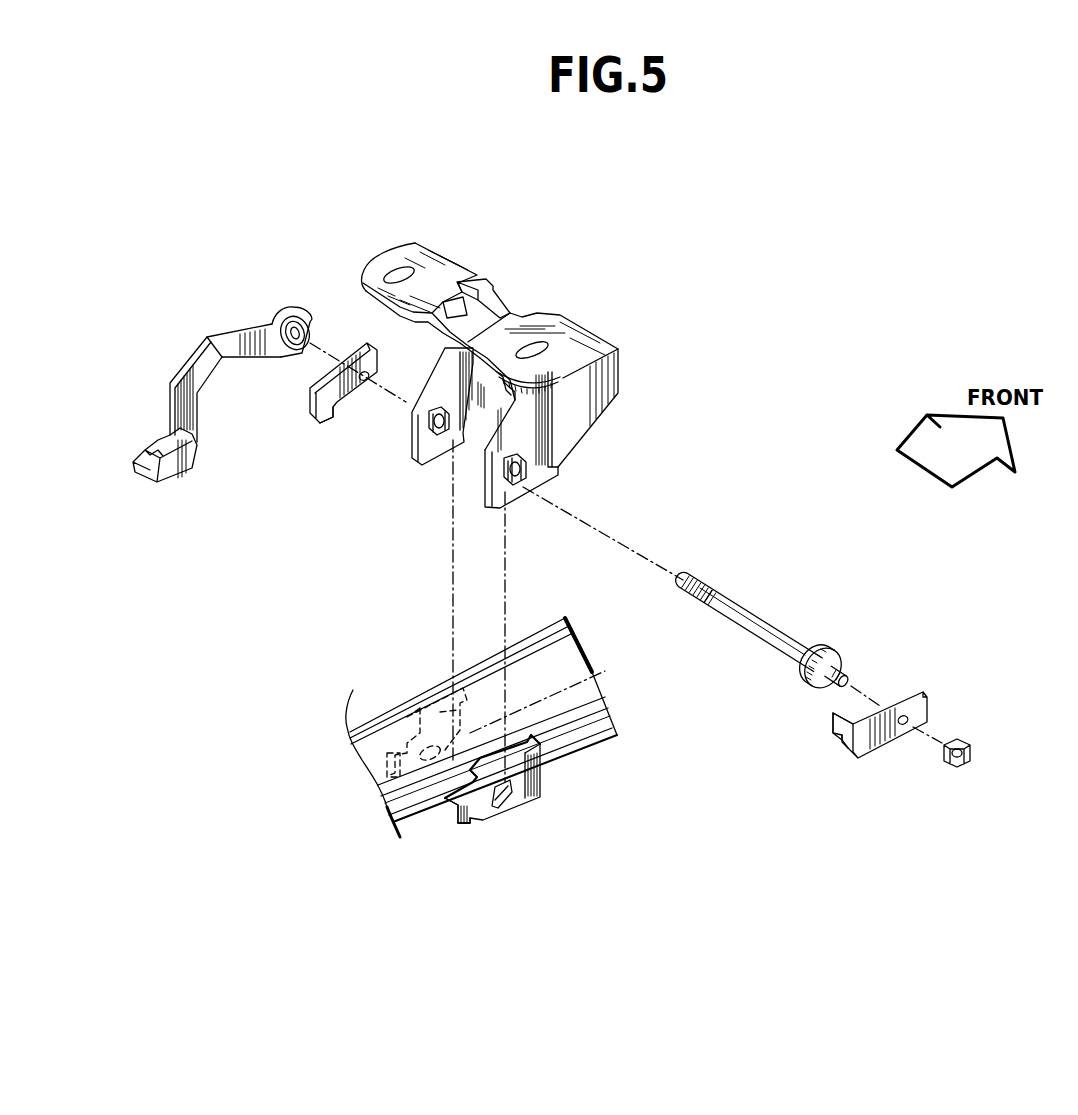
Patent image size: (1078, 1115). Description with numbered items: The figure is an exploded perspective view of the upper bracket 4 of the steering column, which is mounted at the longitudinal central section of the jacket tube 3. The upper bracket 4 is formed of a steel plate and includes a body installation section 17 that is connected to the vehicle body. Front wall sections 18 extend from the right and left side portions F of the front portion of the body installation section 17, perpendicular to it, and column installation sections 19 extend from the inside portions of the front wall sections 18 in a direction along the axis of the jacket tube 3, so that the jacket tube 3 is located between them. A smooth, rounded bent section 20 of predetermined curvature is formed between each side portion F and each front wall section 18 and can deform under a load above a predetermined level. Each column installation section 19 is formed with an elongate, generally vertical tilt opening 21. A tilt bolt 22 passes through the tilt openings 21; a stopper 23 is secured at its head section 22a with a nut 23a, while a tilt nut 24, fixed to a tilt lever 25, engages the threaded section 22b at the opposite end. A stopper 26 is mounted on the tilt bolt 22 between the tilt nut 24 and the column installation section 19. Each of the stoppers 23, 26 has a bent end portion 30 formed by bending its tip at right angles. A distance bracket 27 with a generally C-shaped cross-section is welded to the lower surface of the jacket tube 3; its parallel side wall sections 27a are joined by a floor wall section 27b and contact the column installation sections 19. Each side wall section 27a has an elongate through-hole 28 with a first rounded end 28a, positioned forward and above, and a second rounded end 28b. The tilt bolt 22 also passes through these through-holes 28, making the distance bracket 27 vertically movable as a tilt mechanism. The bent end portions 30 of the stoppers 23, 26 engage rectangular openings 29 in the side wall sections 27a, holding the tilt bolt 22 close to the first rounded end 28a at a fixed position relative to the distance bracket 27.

The jacket tube 3 is at (353, 690).
The upper bracket 4 is at (528, 367).
The body installation section 17 is at (482, 291).
The front wall section 18 is at (587, 392).
The column installation section 19 is at (528, 434).
The bent section 20 is at (593, 342).
The tilt opening 21 is at (428, 440).
The tilt bolt 22 is at (823, 590).
The head section 22a is at (846, 670).
The threaded section 22b is at (706, 574).
The stopper 23 is at (924, 697).
The nut 23a is at (972, 753).
The tilt nut 24 is at (305, 313).
The tilt lever 25 is at (220, 335).
The stopper 26 is at (352, 340).
The distance bracket 27 is at (499, 840).
The side wall section 27a is at (430, 700).
The floor wall section 27b is at (445, 800).
The elongate through-hole 28 is at (556, 829).
The first rounded end 28a is at (542, 782).
The second rounded end 28b is at (498, 808).
The rectangular opening 29 is at (392, 778).
The bent end portion 30 is at (322, 425).
The side portion F is at (433, 277).